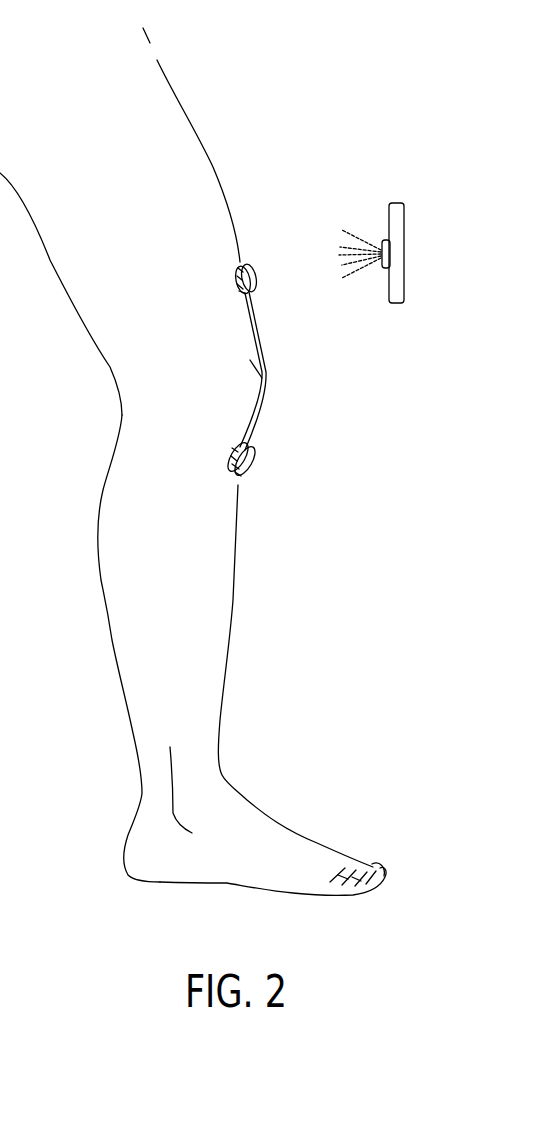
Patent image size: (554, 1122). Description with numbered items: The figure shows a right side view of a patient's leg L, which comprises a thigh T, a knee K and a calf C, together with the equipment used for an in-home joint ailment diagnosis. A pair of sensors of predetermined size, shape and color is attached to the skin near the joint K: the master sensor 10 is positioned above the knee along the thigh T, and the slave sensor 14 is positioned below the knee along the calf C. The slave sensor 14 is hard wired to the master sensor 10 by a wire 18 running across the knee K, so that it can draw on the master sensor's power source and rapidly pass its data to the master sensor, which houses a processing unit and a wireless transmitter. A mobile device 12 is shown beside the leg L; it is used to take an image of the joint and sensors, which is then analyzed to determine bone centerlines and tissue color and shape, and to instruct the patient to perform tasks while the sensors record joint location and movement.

The master sensor 10 is at (257, 272).
The mobile device 12 is at (388, 205).
The slave sensor 14 is at (256, 470).
The wire 18 is at (267, 407).
The thigh T is at (182, 146).
The knee K is at (256, 382).
The calf C is at (122, 610).
The leg L is at (300, 622).